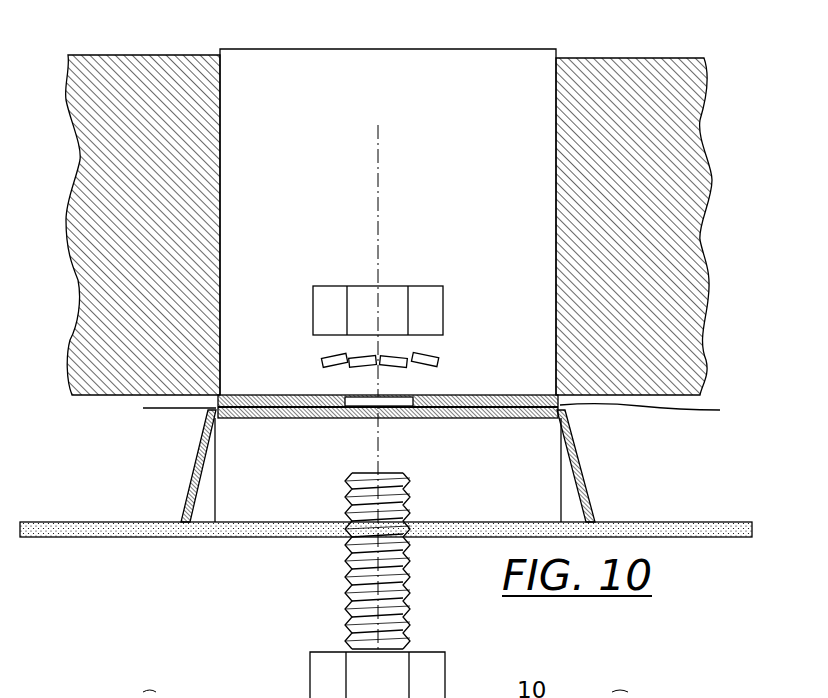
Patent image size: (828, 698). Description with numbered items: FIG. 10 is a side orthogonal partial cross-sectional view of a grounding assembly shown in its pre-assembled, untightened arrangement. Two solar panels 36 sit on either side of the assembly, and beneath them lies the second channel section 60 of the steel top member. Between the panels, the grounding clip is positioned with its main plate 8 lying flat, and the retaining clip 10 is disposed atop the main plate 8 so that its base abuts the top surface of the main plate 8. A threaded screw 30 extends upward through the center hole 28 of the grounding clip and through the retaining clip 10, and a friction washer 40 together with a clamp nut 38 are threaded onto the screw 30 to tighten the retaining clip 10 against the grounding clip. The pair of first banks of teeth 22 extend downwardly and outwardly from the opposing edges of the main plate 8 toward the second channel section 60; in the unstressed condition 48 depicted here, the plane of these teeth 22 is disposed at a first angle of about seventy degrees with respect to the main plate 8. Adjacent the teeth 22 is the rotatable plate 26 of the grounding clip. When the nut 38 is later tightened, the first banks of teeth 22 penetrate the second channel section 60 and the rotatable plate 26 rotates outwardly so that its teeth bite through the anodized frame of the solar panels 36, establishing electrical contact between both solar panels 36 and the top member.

The main plate 8 is at (446, 403).
The retaining clip 10 is at (528, 48).
The first banks of teeth 22 is at (186, 487).
The rotatable plate 26 is at (506, 487).
The center hole 28 is at (413, 418).
The threaded screw 30 is at (347, 590).
The solar panel 36 is at (128, 55).
The clamp nut 38 is at (346, 286).
The friction washer 40 is at (323, 362).
The unstressed condition 48 is at (172, 413).
The second channel section 60 is at (675, 523).